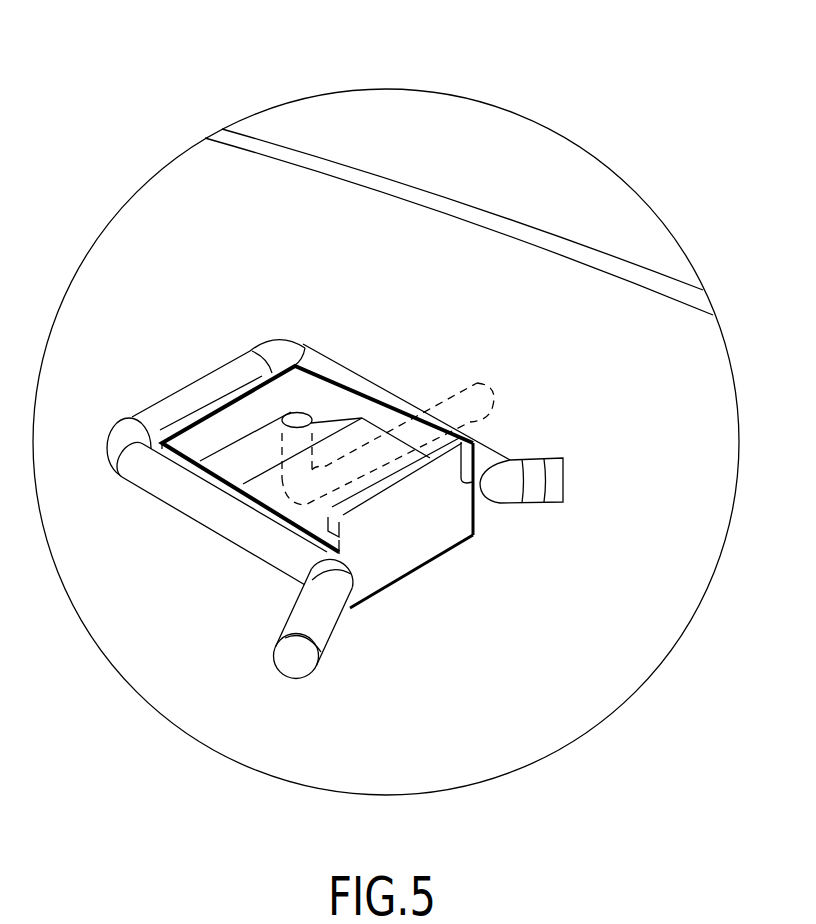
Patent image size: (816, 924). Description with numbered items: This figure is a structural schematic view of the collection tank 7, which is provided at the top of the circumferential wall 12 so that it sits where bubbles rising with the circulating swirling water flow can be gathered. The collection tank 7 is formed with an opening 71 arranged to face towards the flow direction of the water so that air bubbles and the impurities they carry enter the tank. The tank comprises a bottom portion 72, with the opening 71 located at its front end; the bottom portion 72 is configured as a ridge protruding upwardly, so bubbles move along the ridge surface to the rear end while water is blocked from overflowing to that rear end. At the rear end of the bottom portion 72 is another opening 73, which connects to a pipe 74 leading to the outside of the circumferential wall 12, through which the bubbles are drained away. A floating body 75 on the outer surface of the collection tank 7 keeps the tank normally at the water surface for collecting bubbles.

The circumferential wall 12 is at (290, 158).
The collection tank 7 is at (377, 476).
The opening 71 is at (457, 490).
The bottom portion 72 is at (388, 557).
The opening 73 is at (296, 414).
The pipe 74 is at (468, 407).
The floating body 75 is at (213, 503).